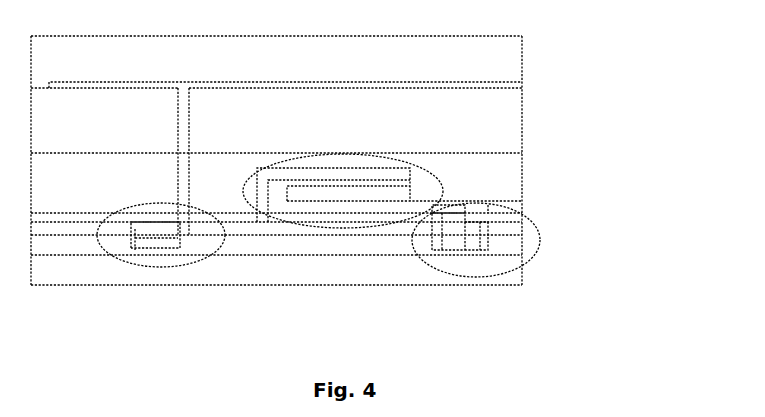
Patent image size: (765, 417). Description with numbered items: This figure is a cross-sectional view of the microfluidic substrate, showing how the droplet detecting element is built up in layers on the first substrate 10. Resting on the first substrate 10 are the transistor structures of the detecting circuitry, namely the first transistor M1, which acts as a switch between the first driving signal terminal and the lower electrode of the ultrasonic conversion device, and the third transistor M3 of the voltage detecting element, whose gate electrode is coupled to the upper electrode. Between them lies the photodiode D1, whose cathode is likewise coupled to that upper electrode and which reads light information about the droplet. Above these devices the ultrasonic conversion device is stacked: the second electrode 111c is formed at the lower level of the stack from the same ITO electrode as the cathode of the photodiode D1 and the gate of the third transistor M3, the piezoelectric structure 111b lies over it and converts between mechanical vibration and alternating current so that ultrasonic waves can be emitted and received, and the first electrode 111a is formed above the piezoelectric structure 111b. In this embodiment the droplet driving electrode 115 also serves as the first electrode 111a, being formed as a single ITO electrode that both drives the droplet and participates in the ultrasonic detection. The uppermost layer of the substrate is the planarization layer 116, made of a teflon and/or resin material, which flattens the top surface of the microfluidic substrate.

The planarization layer 116 is at (505, 50).
The first electrode 111a is at (343, 152).
The droplet driving electrode 115 is at (508, 88).
The piezoelectric structure 111b is at (505, 118).
The second electrode 111c is at (505, 200).
The first substrate 10 is at (522, 272).
The first transistor M1 is at (133, 262).
The photodiode D1 is at (344, 232).
The third transistor M3 is at (503, 268).